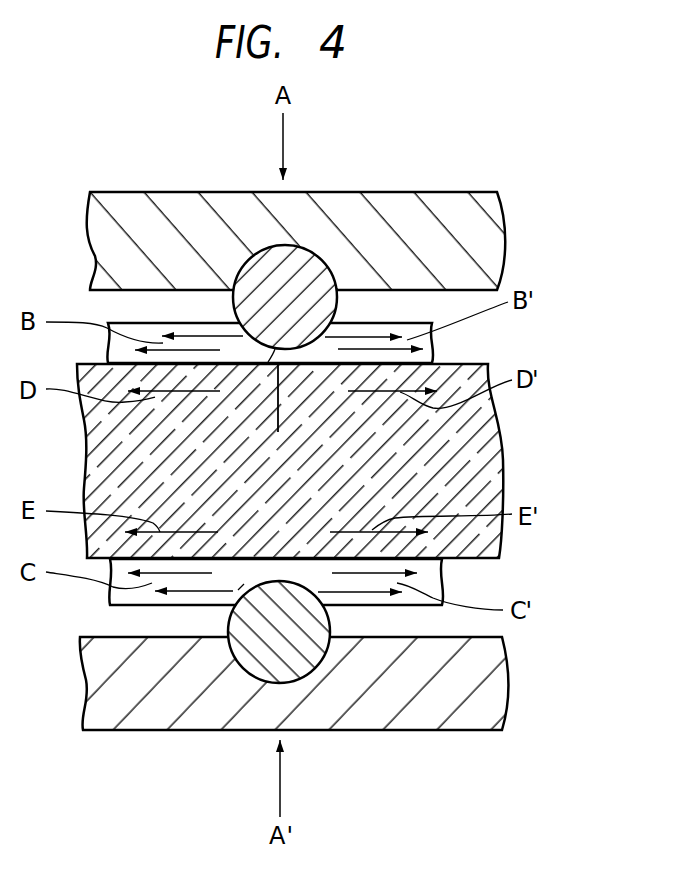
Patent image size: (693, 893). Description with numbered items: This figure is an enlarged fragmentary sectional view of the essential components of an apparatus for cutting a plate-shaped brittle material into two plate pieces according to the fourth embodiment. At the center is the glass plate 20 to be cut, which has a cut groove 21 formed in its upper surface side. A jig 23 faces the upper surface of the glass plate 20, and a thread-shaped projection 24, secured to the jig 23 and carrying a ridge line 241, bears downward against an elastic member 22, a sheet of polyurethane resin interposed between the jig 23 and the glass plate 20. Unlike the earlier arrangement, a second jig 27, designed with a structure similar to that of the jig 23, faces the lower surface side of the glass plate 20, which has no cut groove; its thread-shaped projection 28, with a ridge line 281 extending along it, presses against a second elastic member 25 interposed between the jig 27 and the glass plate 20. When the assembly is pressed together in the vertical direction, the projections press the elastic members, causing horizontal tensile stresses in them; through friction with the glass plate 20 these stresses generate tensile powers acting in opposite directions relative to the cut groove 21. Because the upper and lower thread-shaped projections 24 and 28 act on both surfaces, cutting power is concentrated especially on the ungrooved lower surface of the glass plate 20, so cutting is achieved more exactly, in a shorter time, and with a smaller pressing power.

The glass plate 20 is at (487, 484).
The cut groove 21 is at (280, 413).
The elastic member 22 is at (430, 350).
The jig 23 is at (488, 235).
The thread-shaped projection 24 is at (305, 255).
The ridge line 241 is at (275, 349).
The elastic member 25 is at (437, 572).
The jig 27 is at (472, 681).
The thread-shaped projection 28 is at (318, 650).
The ridge line 281 is at (240, 592).